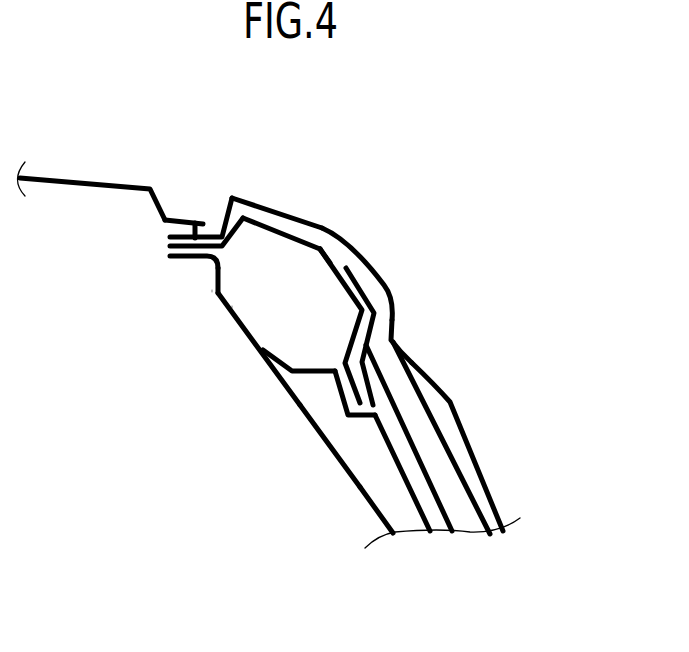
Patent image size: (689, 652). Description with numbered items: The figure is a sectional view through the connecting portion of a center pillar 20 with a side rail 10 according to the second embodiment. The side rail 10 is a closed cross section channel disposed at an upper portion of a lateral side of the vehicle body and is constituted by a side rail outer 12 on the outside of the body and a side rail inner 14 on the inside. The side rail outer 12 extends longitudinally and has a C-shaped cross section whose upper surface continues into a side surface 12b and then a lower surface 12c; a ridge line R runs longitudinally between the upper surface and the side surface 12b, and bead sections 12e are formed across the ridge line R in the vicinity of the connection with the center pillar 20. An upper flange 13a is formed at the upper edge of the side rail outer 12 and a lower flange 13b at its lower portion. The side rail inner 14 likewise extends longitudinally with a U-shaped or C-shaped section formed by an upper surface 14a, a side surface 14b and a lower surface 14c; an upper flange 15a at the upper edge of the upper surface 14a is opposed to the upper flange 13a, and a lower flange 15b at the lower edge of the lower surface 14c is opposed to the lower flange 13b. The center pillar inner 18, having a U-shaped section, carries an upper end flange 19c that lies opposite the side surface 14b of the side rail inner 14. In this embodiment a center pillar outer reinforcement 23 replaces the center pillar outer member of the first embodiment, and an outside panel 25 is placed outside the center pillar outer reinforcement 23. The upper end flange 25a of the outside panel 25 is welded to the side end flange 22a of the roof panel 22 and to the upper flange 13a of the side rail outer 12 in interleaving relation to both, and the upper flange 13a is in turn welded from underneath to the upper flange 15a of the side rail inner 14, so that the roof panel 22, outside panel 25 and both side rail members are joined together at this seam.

The side rail 10 is at (211, 299).
The side rail outer 12 is at (343, 240).
The side surface 12b is at (362, 297).
The lower surface 12c is at (389, 337).
The bead section 12e is at (270, 228).
The ridge line R is at (322, 249).
The upper flange 13a is at (172, 237).
The lower flange 13b is at (360, 398).
The side rail inner 14 is at (231, 307).
The upper surface 14a is at (216, 282).
The side surface 14b is at (257, 335).
The lower surface 14c is at (318, 396).
The upper flange 15a is at (172, 262).
The lower flange 15b is at (340, 427).
The center pillar inner 18 is at (357, 481).
The upper end flange 19c is at (270, 367).
The center pillar 20 is at (354, 522).
The roof panel 22 is at (75, 178).
The side end flange 22a is at (193, 226).
The center pillar outer reinforcement 23 is at (482, 498).
The outside panel 25 is at (415, 364).
The upper end flange 25a is at (196, 222).